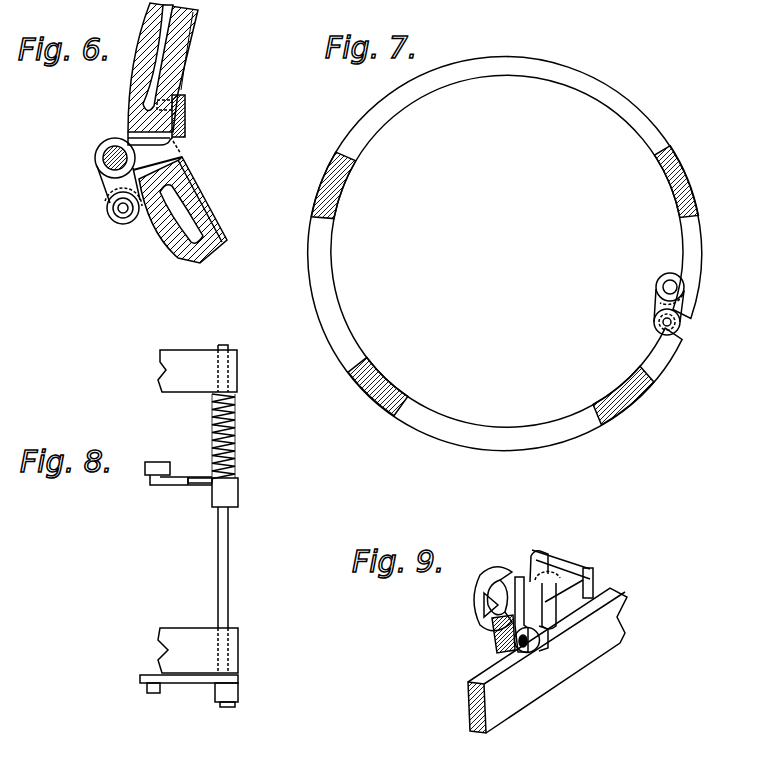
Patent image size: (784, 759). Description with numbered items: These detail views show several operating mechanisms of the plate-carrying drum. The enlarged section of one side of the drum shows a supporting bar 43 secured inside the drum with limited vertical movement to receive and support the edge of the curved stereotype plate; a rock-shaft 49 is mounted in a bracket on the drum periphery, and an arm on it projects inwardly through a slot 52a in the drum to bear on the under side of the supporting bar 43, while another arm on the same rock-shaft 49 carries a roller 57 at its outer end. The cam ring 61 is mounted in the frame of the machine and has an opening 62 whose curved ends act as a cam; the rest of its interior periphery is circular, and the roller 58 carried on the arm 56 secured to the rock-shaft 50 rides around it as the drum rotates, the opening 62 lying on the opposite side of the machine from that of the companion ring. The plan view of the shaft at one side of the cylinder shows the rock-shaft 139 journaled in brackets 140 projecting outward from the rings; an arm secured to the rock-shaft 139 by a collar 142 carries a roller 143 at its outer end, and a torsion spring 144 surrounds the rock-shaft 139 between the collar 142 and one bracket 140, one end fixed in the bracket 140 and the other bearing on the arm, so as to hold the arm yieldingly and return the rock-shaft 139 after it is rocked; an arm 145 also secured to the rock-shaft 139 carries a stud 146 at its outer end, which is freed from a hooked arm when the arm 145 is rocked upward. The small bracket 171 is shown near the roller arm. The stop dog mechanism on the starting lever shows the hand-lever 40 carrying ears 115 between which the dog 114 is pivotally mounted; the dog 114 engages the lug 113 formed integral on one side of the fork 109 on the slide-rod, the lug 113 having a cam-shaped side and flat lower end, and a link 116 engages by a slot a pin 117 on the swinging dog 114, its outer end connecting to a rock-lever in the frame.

In FIG. 6, the supporting bar 43 is at (184, 130).
In FIG. 6, the slot 52a is at (135, 134).
In FIG. 6, the rock-shaft 49 is at (108, 148).
In FIG. 6, the roller 57 is at (106, 210).
In FIG. 7, the cam ring 61 is at (613, 100).
In FIG. 7, the rock-shaft 50 is at (668, 280).
In FIG. 7, the arm 56 is at (654, 322).
In FIG. 7, the opening 62 is at (691, 318).
In FIG. 7, the roller 58 is at (681, 325).
In FIG. 8, the bracket 140 is at (192, 360).
In FIG. 8, the torsion spring 144 is at (236, 421).
In FIG. 8, the collar 142 is at (236, 493).
In FIG. 8, the roller 143 is at (158, 464).
In FIG. 8, the arm 171 is at (186, 488).
In FIG. 8, the rock-shaft 139 is at (229, 576).
In FIG. 8, the arm 145 is at (196, 680).
In FIG. 8, the stud 146 is at (151, 694).
In FIG. 9, the hand-lever 40 is at (588, 645).
In FIG. 9, the fork 109 is at (493, 568).
In FIG. 9, the lug 113 is at (519, 578).
In FIG. 9, the pin 117 is at (550, 562).
In FIG. 9, the link 116 is at (578, 572).
In FIG. 9, the dog 114 is at (594, 582).
In FIG. 9, the ears 115 is at (541, 627).